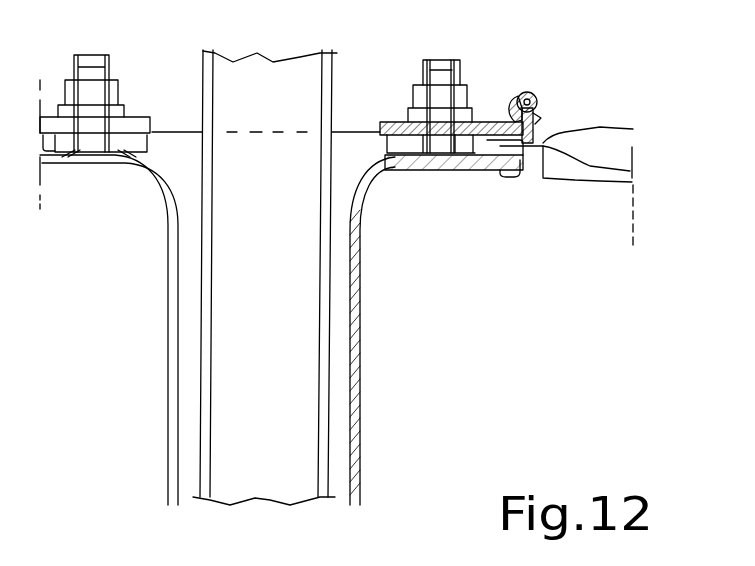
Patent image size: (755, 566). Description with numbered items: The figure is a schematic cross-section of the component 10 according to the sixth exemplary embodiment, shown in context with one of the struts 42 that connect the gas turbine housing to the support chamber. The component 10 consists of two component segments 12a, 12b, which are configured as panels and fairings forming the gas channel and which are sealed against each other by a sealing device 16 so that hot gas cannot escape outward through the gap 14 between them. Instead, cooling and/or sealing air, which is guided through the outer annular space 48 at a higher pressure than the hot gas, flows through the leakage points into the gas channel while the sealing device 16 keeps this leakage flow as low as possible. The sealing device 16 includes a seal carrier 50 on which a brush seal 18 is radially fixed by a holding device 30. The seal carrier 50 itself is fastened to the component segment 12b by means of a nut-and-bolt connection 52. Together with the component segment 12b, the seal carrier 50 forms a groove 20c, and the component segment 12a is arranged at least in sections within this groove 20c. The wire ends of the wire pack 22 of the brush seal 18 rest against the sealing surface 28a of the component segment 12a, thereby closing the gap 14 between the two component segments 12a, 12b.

The component 10 is at (374, 252).
The component segment 12a is at (615, 185).
The component segment 12b is at (360, 313).
The gap 14 is at (526, 172).
The sealing device 16 is at (606, 124).
The brush seal 18 is at (545, 117).
The groove 20c is at (463, 165).
The wire pack 22 is at (512, 173).
The sealing surface 28a is at (633, 129).
The holding device 30 is at (540, 92).
The strut 42 is at (217, 93).
The outer annular space 48 is at (423, 76).
The seal carrier 50 is at (478, 118).
The nut-and-bolt connection 52 is at (447, 60).